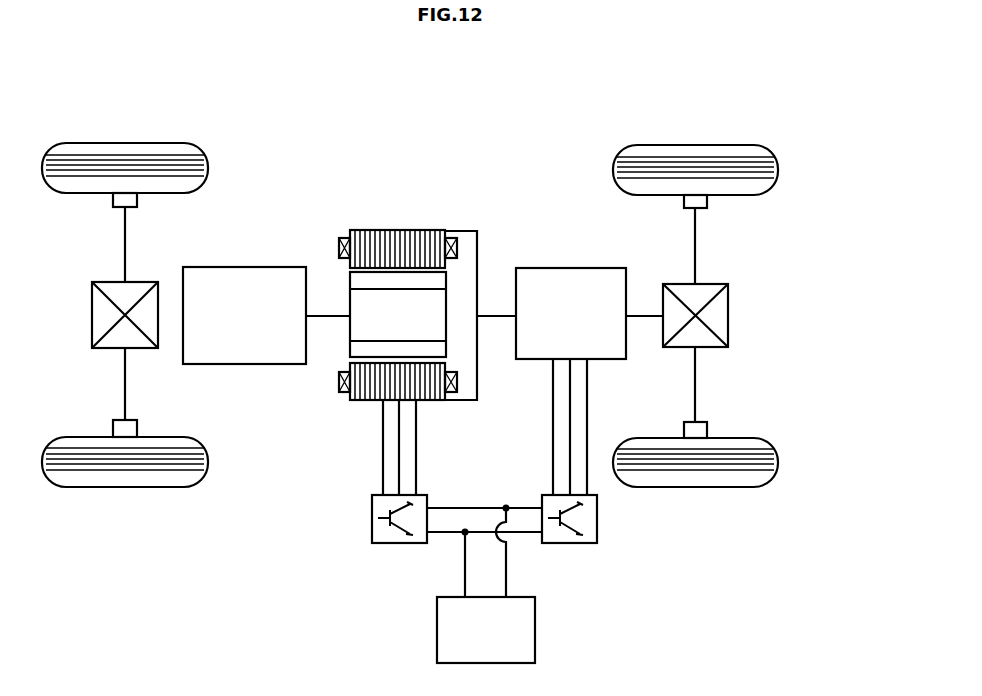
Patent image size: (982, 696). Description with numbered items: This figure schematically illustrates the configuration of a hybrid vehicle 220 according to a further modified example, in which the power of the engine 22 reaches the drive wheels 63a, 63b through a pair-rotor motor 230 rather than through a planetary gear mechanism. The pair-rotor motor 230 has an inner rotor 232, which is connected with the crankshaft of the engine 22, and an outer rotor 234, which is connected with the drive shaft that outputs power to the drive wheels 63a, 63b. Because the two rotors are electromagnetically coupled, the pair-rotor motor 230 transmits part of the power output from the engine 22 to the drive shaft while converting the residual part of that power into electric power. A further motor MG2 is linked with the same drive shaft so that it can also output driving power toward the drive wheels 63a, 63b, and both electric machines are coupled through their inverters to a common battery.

The hybrid vehicle 220 is at (336, 108).
The engine 22 is at (247, 267).
The pair-rotor motor 230 is at (408, 172).
The inner rotor 232 is at (350, 300).
The outer rotor 234 is at (433, 230).
The motor MG2 is at (572, 268).
The drive wheel 63a is at (697, 145).
The drive wheel 63b is at (697, 488).